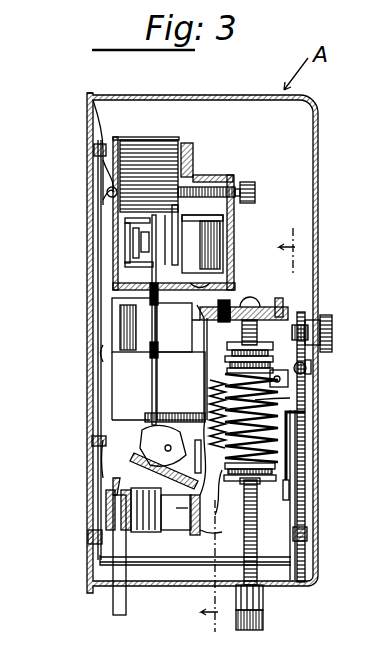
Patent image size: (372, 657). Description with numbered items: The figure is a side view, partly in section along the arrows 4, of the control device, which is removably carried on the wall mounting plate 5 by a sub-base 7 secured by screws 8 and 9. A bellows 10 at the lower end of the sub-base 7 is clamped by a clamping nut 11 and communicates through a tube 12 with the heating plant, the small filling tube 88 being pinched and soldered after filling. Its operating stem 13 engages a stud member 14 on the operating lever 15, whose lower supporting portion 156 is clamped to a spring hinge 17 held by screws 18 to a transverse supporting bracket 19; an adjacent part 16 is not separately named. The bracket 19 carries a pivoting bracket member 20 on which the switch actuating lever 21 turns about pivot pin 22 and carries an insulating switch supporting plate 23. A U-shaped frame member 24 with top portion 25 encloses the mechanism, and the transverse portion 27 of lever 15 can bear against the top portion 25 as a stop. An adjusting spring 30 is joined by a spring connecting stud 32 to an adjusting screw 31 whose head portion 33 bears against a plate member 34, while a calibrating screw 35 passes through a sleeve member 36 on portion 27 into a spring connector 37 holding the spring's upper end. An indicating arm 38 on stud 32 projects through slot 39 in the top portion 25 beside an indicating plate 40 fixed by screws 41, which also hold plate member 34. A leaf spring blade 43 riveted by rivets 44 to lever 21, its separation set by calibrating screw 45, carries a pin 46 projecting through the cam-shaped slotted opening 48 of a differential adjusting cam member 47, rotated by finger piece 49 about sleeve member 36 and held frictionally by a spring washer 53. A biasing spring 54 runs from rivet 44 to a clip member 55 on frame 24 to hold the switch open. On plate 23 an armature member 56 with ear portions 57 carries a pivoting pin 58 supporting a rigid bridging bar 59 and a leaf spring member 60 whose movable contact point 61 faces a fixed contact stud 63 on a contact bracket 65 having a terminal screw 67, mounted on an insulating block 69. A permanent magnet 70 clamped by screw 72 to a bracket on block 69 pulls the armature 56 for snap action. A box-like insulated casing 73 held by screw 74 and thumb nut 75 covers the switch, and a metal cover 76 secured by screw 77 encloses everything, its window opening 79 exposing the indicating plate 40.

The section line 4 is at (255, 430).
The wall mounting plate 5 is at (88, 106).
The sub-base 7 is at (100, 382).
The screw 8 is at (93, 150).
The screw 9 is at (92, 440).
The bellows 10 is at (140, 555).
The clamping nut 11 is at (95, 540).
The tube 12 is at (115, 603).
The operating stem 13 is at (168, 555).
The stud member 14 is at (190, 540).
The operating lever 15 is at (258, 530).
The plate 16 is at (188, 487).
The spring hinge 17 is at (164, 474).
The screws 18 is at (150, 470).
The transverse supporting bracket 19 is at (135, 460).
The pivoting bracket member 20 is at (131, 421).
The switch actuating lever 21 is at (152, 376).
The pivot pin 22 is at (145, 420).
The insulating switch supporting plate 23 is at (150, 318).
The frame member 24 is at (133, 332).
The top portion 25 is at (305, 322).
The transverse end portion 27 is at (290, 310).
The adjusting spring 30 is at (255, 402).
The adjusting screw 31 is at (258, 512).
The spring connecting stud 32 is at (275, 465).
The adjusting head portion 33 is at (265, 615).
The plate member 34 is at (300, 570).
The calibrating screw 35 is at (262, 300).
The sleeve member 36 is at (278, 298).
The spring connector 37 is at (306, 366).
The adjustment indicating arm 38 is at (305, 430).
The slot 39 is at (300, 440).
The indicating plate 40 is at (306, 413).
The screws 41 is at (308, 535).
The leaf spring blade 43 is at (204, 392).
The rivets 44 is at (215, 467).
The calibrating screw 45 is at (178, 420).
The pin 46 is at (226, 300).
The differential adjusting cam member 47 is at (202, 320).
The cam-shaped slotted opening 48 is at (240, 357).
The finger piece 49 is at (258, 318).
The spring washer 53 is at (292, 334).
The biasing spring 54 is at (210, 372).
The clip member 55 is at (290, 378).
The armature member 56 is at (174, 327).
The ear portions 57 is at (130, 216).
The pivoting pin 58 is at (130, 231).
The rigid bridging bar 59 is at (135, 243).
The leaf spring member 60 is at (150, 250).
The movable contact point 61 is at (164, 320).
The fixed contact stud 63 is at (169, 235).
The contact bracket 65 is at (212, 222).
The terminal screw 67 is at (183, 144).
The insulating block 69 is at (160, 132).
The permanent magnet 70 is at (205, 242).
The screw 72 is at (203, 294).
The insulated casing 73 is at (212, 176).
The screw 74 is at (228, 186).
The thumb nut 75 is at (255, 188).
The metal cover 76 is at (248, 100).
The screw 77 is at (333, 326).
The window opening 79 is at (318, 470).
The small tube 88 is at (115, 485).
The lower supporting portion 156 is at (222, 544).